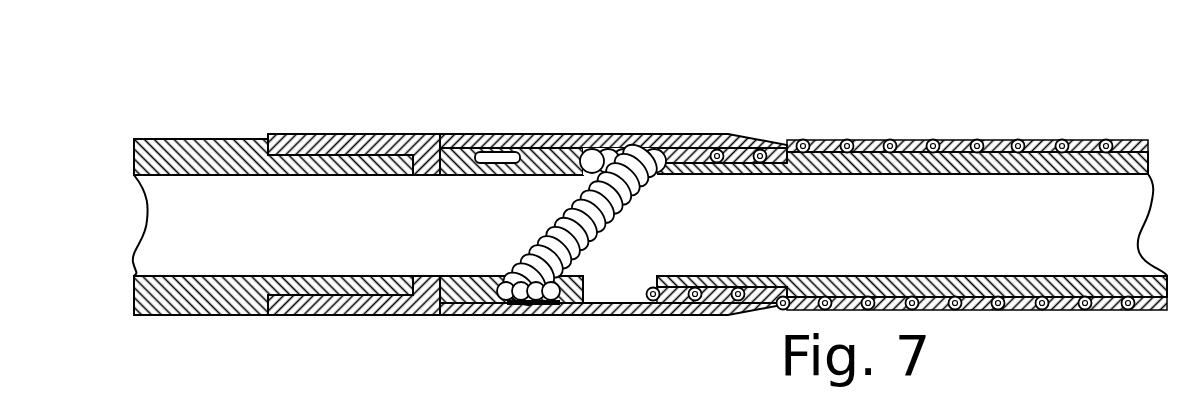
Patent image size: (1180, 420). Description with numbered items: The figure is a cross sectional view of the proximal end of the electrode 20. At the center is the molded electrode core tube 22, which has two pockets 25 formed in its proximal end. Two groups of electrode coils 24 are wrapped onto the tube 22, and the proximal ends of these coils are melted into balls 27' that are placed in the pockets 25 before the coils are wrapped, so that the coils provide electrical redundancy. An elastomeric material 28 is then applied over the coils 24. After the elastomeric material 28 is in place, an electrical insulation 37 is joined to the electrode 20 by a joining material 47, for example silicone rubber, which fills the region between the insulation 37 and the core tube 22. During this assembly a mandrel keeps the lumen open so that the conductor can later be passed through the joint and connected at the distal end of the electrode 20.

The electrode 20 is at (962, 101).
The molded electrode core tube 22 is at (540, 145).
The electrode coils 24 is at (888, 143).
The pockets 25 is at (497, 157).
The balls 27' is at (581, 272).
The elastomeric material 28 is at (828, 143).
The electrical insulation 37 is at (182, 138).
The joining material 47 is at (350, 137).